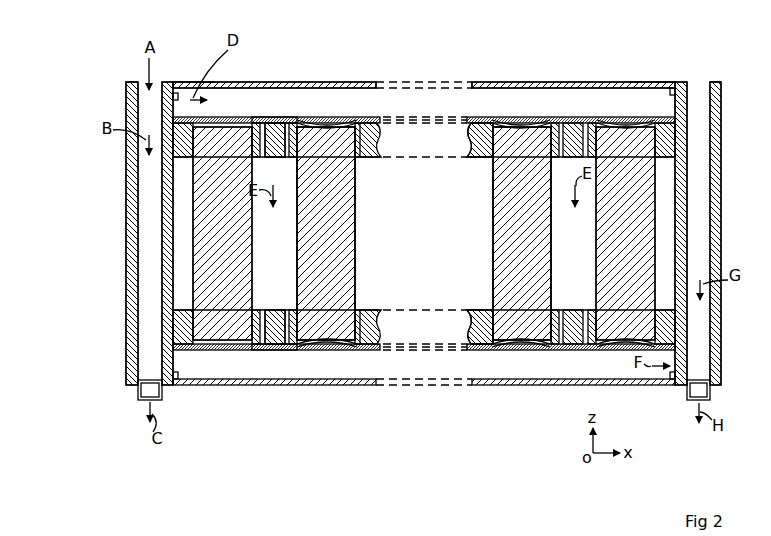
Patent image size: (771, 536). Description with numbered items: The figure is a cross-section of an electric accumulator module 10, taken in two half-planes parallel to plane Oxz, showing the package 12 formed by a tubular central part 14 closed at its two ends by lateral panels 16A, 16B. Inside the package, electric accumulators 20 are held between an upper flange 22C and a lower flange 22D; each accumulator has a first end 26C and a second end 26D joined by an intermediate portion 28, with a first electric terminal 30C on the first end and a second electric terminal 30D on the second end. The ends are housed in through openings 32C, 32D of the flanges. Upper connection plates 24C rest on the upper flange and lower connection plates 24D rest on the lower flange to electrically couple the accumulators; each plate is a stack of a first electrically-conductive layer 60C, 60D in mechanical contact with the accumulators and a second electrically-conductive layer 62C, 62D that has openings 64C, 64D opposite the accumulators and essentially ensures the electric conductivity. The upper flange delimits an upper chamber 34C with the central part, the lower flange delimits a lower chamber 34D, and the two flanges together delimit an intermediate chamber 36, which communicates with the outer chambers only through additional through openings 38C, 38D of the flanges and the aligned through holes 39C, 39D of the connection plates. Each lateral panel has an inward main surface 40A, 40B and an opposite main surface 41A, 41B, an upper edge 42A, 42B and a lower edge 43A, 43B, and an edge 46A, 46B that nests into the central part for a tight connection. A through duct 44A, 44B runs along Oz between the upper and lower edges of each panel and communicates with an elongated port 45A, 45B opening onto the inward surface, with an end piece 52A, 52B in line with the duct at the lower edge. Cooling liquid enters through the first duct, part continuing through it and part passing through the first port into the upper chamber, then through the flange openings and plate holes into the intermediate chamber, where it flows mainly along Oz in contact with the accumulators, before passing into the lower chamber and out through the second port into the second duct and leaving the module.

The electric accumulator module 10 is at (601, 71).
The package 12 is at (291, 80).
The central part 14 is at (344, 82).
The lateral panel 16A is at (130, 386).
The lateral panel 16B is at (716, 386).
The electric accumulator 20 is at (215, 335).
The upper flange 22C is at (185, 126).
The lower flange 22D is at (183, 345).
The upper connection plate 24C is at (283, 111).
The lower connection plate 24D is at (290, 352).
The first end 26C is at (262, 123).
The second end 26D is at (262, 345).
The intermediate portion 28 is at (228, 232).
The first electric terminal 30C is at (318, 122).
The second electric terminal 30D is at (228, 352).
The through opening 32C is at (330, 127).
The through opening 32D is at (352, 345).
The upper chamber 34C is at (512, 103).
The lower chamber 34D is at (545, 345).
The intermediate chamber 36 is at (574, 170).
The additional through opening 38C is at (268, 157).
The additional through opening 38D is at (268, 310).
The through hole 39C is at (255, 117).
The through hole 39D is at (278, 355).
The main surface 40A is at (182, 85).
The main surface 40B is at (657, 85).
The main surface 41A is at (128, 90).
The main surface 41B is at (719, 82).
The upper edge 42A is at (166, 84).
The upper edge 42B is at (683, 82).
The lower edge 43A is at (168, 386).
The lower edge 43B is at (681, 386).
The through duct 44A is at (150, 83).
The through duct 44B is at (705, 82).
The elongated port 45A is at (176, 93).
The elongated port 45B is at (672, 378).
The edge 46A is at (177, 380).
The edge 46B is at (672, 88).
The end piece 52A is at (148, 401).
The end piece 52B is at (697, 401).
The first electrically-conductive layer 60C is at (468, 138).
The first electrically-conductive layer 60D is at (470, 338).
The second electrically-conductive layer 62C is at (480, 123).
The second electrically-conductive layer 62D is at (480, 345).
The opening 64C is at (520, 120).
The opening 64D is at (502, 350).